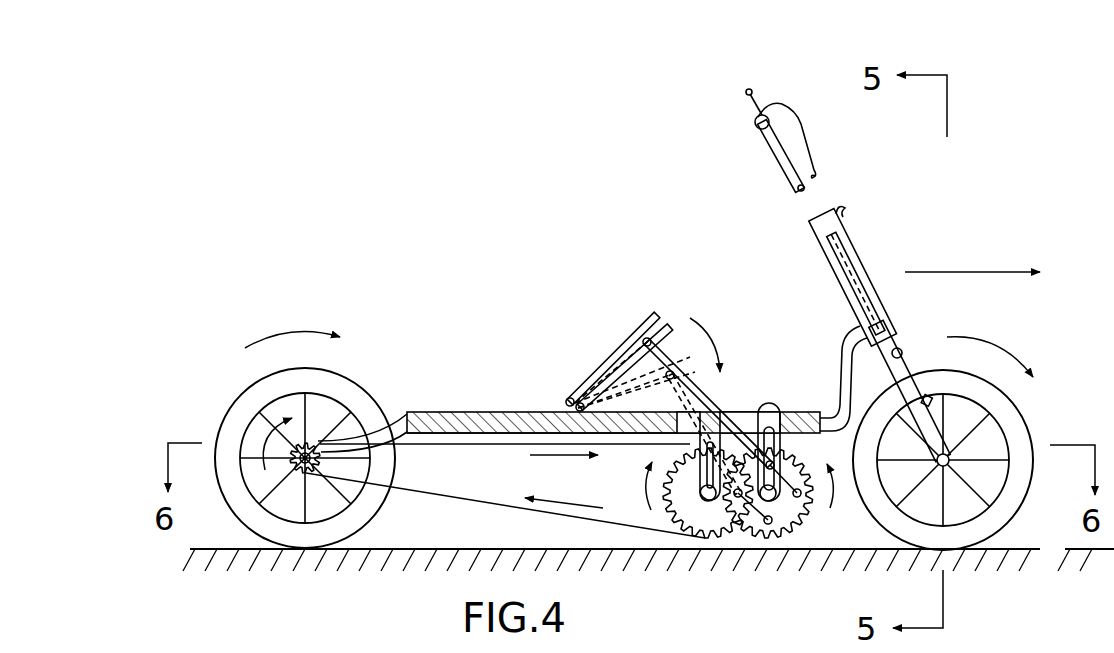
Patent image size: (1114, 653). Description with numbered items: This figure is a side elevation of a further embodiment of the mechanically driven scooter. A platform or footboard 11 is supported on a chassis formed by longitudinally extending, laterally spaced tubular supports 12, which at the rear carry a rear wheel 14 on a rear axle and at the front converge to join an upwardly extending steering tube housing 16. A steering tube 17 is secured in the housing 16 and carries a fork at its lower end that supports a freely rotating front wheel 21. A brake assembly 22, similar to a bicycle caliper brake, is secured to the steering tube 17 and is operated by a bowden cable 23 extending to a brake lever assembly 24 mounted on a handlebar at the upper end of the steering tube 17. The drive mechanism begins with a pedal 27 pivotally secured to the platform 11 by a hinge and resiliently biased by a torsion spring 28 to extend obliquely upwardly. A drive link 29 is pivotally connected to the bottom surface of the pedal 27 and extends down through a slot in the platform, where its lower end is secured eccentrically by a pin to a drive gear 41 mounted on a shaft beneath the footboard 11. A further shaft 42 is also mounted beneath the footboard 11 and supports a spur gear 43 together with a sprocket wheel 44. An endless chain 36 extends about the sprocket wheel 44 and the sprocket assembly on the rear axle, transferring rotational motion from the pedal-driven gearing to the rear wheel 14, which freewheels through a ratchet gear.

The platform or footboard 11 is at (497, 410).
The tubular supports 12 is at (395, 410).
The rear wheel 14 is at (248, 390).
The steering tube housing 16 is at (857, 240).
The steering tube 17 is at (777, 162).
The front wheel 21 is at (1020, 407).
The brake assembly 22 is at (903, 367).
The bowden cable 23 is at (800, 132).
The brake lever assembly 24 is at (752, 92).
The pedal 27 is at (630, 343).
The torsion spring 28 is at (600, 433).
The drive link 29 is at (703, 388).
The endless chain 36 is at (432, 493).
The drive gear 41 is at (797, 520).
The shaft 42 is at (713, 520).
The spur gear 43 is at (703, 520).
The sprocket wheel 44 is at (667, 513).